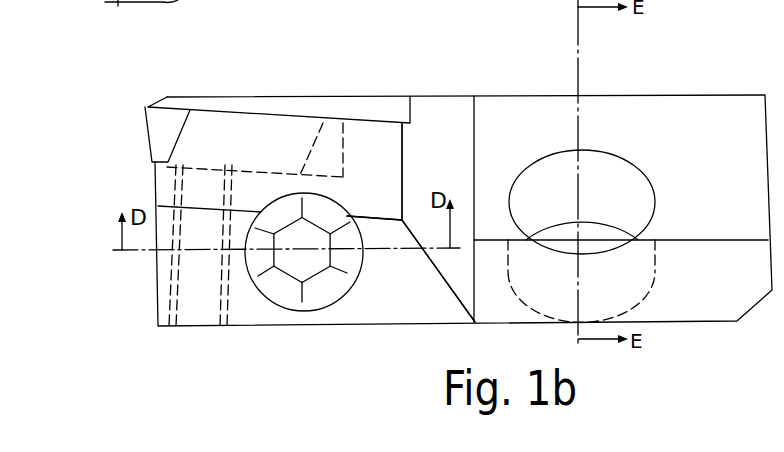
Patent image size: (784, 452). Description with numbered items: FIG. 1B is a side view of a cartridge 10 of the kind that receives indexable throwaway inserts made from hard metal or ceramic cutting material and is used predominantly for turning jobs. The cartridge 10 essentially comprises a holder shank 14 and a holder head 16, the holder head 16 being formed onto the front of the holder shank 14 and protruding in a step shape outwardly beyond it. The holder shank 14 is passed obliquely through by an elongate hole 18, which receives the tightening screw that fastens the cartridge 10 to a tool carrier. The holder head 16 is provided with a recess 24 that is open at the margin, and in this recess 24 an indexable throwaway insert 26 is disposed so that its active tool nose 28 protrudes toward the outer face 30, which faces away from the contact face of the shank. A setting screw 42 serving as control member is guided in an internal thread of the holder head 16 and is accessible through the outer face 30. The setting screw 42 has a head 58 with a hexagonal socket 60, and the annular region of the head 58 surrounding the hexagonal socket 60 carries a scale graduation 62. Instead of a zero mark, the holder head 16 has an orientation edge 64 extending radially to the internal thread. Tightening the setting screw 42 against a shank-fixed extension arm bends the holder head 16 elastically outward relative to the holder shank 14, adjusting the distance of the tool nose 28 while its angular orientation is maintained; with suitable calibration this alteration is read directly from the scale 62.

The cartridge 10 is at (683, 103).
The holder shank 14 is at (580, 122).
The holder head 16 is at (433, 133).
The elongate hole 18 is at (620, 190).
The recess 24 is at (345, 153).
The indexable throwaway insert 26 is at (160, 130).
The active tool nose 28 is at (173, 0).
The outer face 30 is at (197, 183).
The setting screw 42 is at (343, 257).
The head 58 is at (287, 213).
The hexagonal socket 60 is at (291, 271).
The scale graduation 62 is at (265, 278).
The orientation edge 64 is at (392, 242).